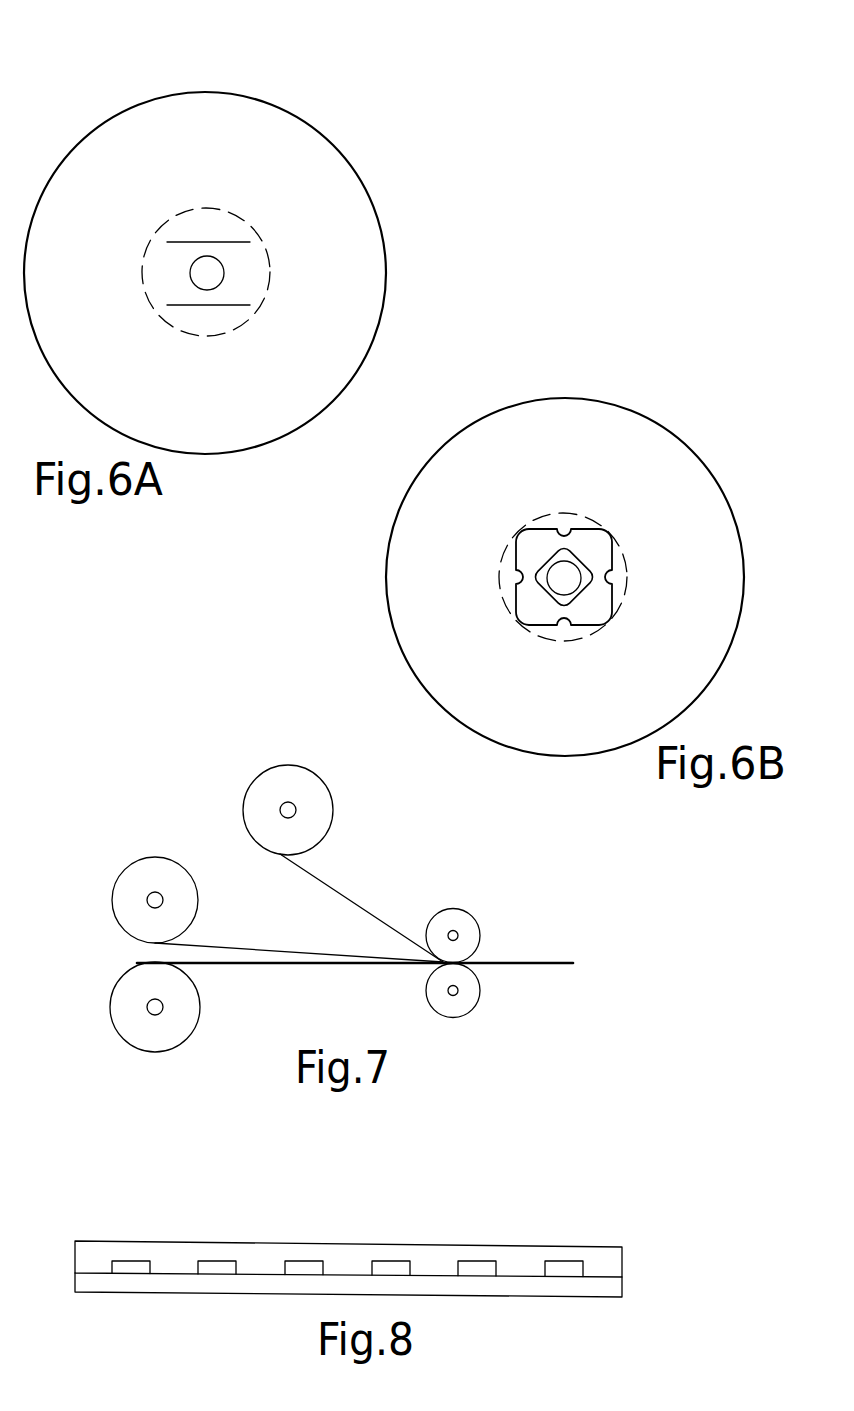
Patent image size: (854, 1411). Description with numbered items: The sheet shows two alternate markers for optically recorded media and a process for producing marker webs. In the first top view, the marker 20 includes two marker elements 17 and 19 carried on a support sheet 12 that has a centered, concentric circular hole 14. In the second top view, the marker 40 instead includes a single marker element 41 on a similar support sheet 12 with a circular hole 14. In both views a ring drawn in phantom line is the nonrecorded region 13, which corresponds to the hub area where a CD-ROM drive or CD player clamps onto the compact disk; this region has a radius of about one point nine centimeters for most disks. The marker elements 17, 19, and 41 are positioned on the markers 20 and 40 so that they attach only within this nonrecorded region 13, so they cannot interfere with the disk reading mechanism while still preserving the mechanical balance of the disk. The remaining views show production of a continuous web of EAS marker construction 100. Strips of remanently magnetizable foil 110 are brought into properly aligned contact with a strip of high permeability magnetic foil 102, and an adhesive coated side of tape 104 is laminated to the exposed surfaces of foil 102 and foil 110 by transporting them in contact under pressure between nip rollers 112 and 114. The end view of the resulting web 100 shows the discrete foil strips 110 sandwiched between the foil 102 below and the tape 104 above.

In FIG. 6A, the support sheet 12 is at (328, 142).
In FIG. 6B, the support sheet 12 is at (723, 502).
In FIG. 6A, the nonrecorded region 13 is at (240, 222).
In FIG. 6B, the nonrecorded region 13 is at (601, 525).
In FIG. 6A, the circular hole 14 is at (217, 258).
In FIG. 6B, the circular hole 14 is at (556, 570).
In FIG. 6A, the marker element 17 is at (187, 242).
In FIG. 6A, the marker element 19 is at (237, 306).
In FIG. 6A, the marker 20 is at (208, 236).
In FIG. 6B, the marker 40 is at (589, 541).
In FIG. 6B, the marker element 41 is at (521, 545).
In FIG. 7, the EAS marker construction 100 is at (358, 910).
In FIG. 8, the EAS marker construction 100 is at (401, 1219).
In FIG. 7, the high permeability magnetic foil 102 is at (230, 965).
In FIG. 8, the high permeability magnetic foil 102 is at (612, 1285).
In FIG. 7, the tape 104 is at (340, 893).
In FIG. 8, the tape 104 is at (612, 1257).
In FIG. 7, the remanently magnetizable foil 110 is at (288, 950).
In FIG. 8, the remanently magnetizable foil 110 is at (560, 1261).
In FIG. 7, the nip roller 112 is at (462, 910).
In FIG. 7, the nip roller 114 is at (468, 1013).